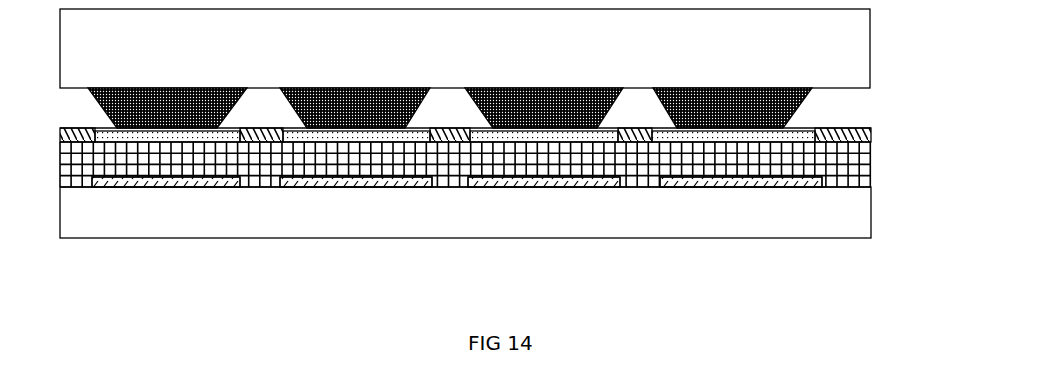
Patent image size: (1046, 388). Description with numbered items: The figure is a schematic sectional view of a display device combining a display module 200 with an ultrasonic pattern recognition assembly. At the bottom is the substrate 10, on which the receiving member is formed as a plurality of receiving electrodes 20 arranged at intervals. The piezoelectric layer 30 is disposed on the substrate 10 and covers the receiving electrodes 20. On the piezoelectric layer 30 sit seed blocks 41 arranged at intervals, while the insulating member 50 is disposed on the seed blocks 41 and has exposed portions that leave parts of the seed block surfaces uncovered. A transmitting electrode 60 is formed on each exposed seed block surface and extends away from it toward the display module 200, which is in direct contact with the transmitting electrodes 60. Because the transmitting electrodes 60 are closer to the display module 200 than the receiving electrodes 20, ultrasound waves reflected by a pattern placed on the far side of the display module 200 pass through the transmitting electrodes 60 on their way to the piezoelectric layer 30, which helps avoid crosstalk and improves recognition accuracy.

The display module 200 is at (822, 54).
The transmitting electrode 60 is at (800, 88).
The seed block 41 is at (792, 129).
The insulating member 50 is at (858, 129).
The piezoelectric layer 30 is at (860, 178).
The receiving electrode 20 is at (723, 187).
The substrate 10 is at (863, 227).